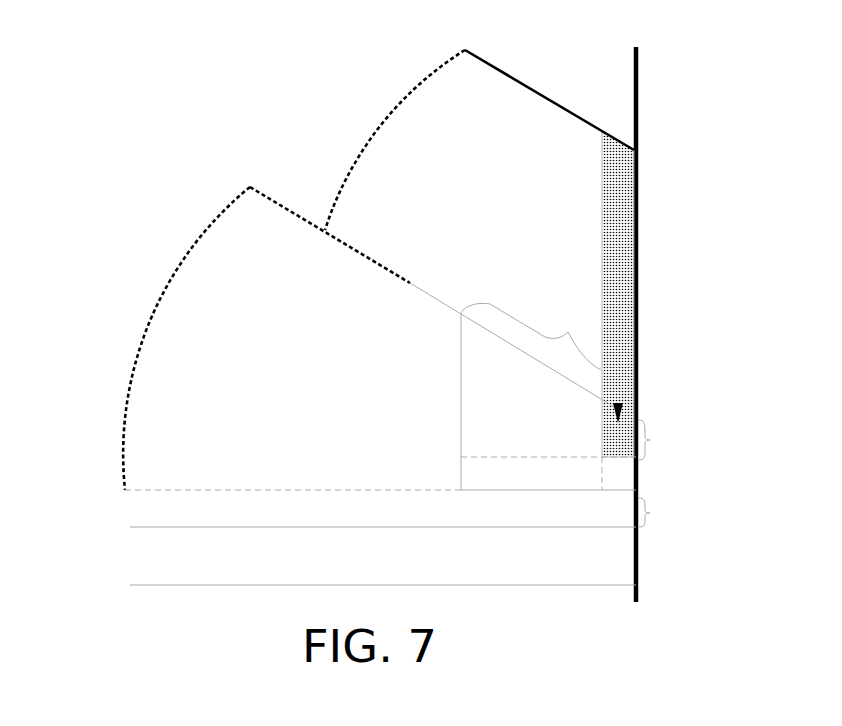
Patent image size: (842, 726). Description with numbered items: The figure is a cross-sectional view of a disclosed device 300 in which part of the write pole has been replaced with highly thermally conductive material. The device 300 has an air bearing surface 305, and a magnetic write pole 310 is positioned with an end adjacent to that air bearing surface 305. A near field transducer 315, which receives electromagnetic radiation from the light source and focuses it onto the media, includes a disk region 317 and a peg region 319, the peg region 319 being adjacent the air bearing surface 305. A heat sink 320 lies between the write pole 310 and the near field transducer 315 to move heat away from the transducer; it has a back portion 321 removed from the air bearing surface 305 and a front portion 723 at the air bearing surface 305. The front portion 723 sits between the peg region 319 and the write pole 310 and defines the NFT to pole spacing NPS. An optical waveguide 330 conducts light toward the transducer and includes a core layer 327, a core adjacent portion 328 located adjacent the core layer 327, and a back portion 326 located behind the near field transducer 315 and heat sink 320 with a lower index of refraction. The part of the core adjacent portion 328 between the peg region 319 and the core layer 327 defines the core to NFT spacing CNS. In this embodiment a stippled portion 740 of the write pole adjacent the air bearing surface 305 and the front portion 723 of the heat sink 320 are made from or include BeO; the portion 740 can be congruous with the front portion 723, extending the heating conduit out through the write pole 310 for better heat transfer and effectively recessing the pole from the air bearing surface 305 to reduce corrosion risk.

The device 300 is at (128, 170).
The air bearing surface 305 is at (655, 137).
The portion of the write pole 740 is at (627, 197).
The write pole 310 is at (532, 237).
The heat sink 320 is at (568, 332).
The front portion of the heat sink 723 is at (623, 385).
The back portion 326 is at (311, 363).
The optical waveguide 330 is at (107, 180).
The back portion of the heat sink 321 is at (535, 422).
The disk region 317 is at (548, 487).
The core adjacent portion 328 is at (249, 522).
The core layer 327 is at (231, 566).
The near field transducer 315 is at (634, 493).
The peg region 319 is at (650, 482).
The NFT to pole spacing NPS is at (683, 439).
The core to NFT spacing CNS is at (683, 507).